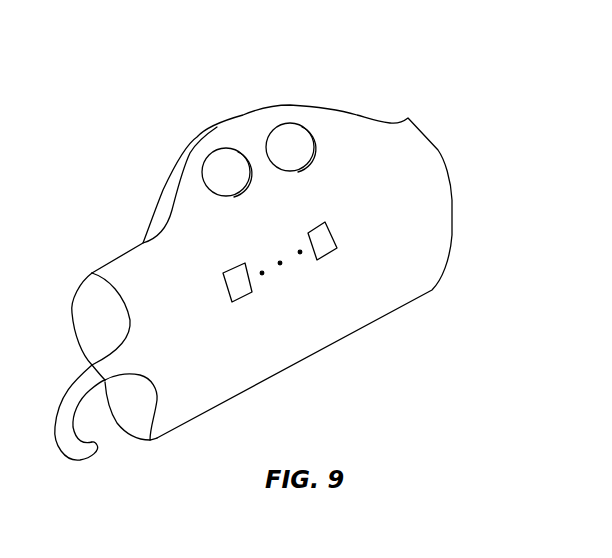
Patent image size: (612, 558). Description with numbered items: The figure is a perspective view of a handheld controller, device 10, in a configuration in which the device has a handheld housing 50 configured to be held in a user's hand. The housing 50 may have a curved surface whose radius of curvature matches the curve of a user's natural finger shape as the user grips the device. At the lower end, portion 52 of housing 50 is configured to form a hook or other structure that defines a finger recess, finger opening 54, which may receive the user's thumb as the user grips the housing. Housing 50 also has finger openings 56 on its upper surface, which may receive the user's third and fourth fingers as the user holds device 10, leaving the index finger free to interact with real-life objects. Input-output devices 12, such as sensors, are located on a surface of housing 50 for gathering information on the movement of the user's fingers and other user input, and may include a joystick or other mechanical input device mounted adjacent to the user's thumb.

The device 10 is at (279, 275).
The handheld housing 50 is at (440, 229).
The finger openings 56 is at (225, 158).
The input-output devices 12 is at (318, 260).
The portion of housing 52 is at (77, 448).
The finger opening 54 is at (127, 459).